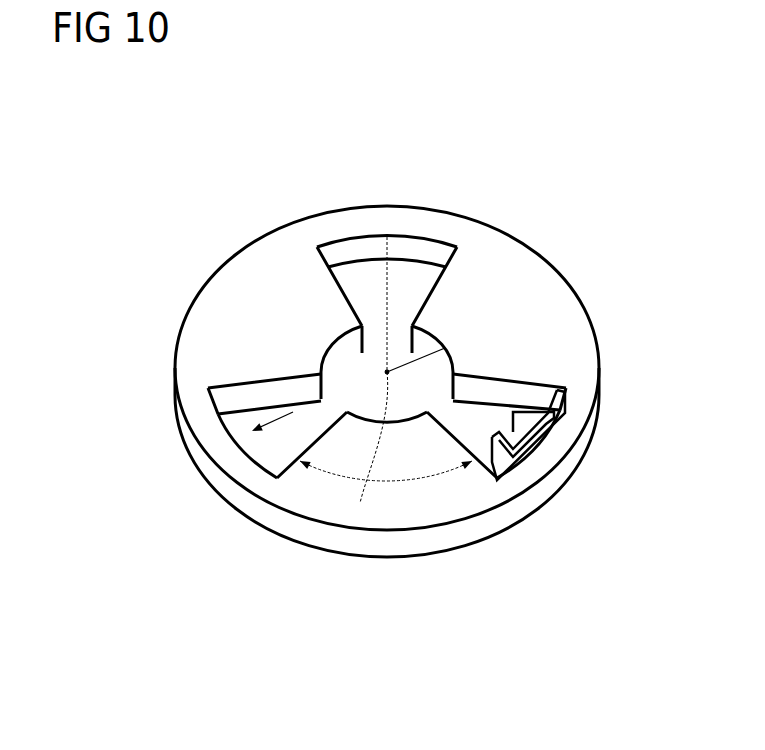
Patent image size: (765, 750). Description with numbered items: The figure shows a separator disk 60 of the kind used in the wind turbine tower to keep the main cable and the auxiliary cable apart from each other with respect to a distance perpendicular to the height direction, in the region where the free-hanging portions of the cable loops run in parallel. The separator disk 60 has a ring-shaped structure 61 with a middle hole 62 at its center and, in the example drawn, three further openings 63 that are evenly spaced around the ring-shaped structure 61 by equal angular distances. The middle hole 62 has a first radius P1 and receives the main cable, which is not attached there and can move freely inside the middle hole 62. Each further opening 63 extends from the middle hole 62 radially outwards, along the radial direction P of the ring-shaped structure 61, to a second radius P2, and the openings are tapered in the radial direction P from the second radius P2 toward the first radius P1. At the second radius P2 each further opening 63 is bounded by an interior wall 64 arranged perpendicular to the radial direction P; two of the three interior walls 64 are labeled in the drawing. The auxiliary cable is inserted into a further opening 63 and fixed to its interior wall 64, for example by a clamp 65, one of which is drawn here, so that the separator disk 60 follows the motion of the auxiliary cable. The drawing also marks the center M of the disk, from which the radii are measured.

The separator disk 60 is at (178, 169).
The ring-shaped structure 61 is at (292, 227).
The middle hole 62 is at (340, 332).
The further opening 63 is at (440, 285).
The interior wall 64 is at (422, 248).
The clamp 65 is at (548, 404).
The radial direction P is at (292, 416).
The first radius P1 is at (445, 348).
The second radius P2 is at (387, 281).
The center axis M is at (360, 503).